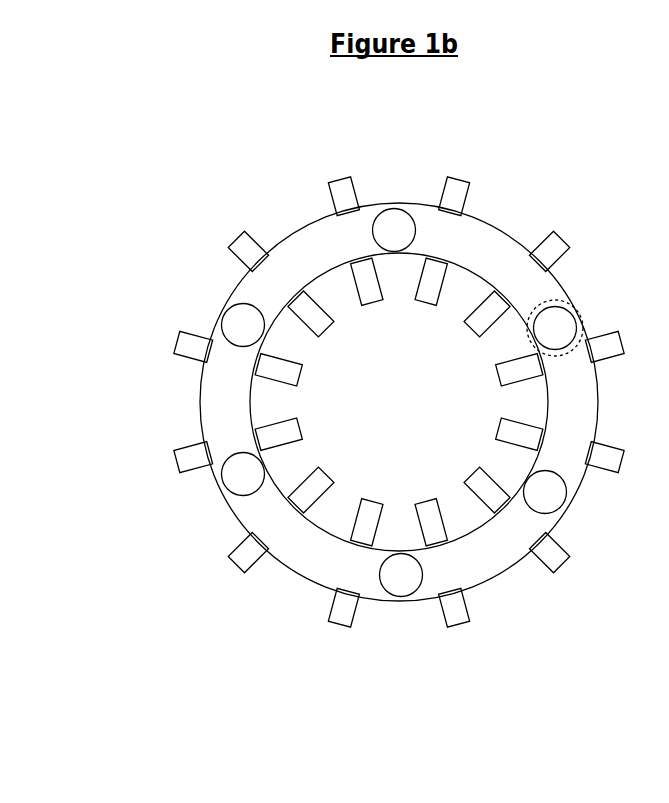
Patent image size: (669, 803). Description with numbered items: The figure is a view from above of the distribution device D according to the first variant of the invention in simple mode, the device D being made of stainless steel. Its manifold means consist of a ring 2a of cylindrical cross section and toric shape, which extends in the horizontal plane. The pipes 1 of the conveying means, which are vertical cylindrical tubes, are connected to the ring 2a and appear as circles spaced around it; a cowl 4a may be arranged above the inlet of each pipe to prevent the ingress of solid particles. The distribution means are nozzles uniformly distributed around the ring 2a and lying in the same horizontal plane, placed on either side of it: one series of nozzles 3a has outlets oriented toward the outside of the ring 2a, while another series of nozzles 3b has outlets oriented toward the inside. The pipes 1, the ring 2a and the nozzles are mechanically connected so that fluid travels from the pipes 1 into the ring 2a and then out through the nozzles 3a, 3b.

The distribution device D is at (265, 205).
The pipes 1 is at (401, 578).
The ring 2a is at (313, 548).
The nozzles 3a is at (613, 466).
The nozzles 3b is at (469, 480).
The cowls 4a is at (582, 318).